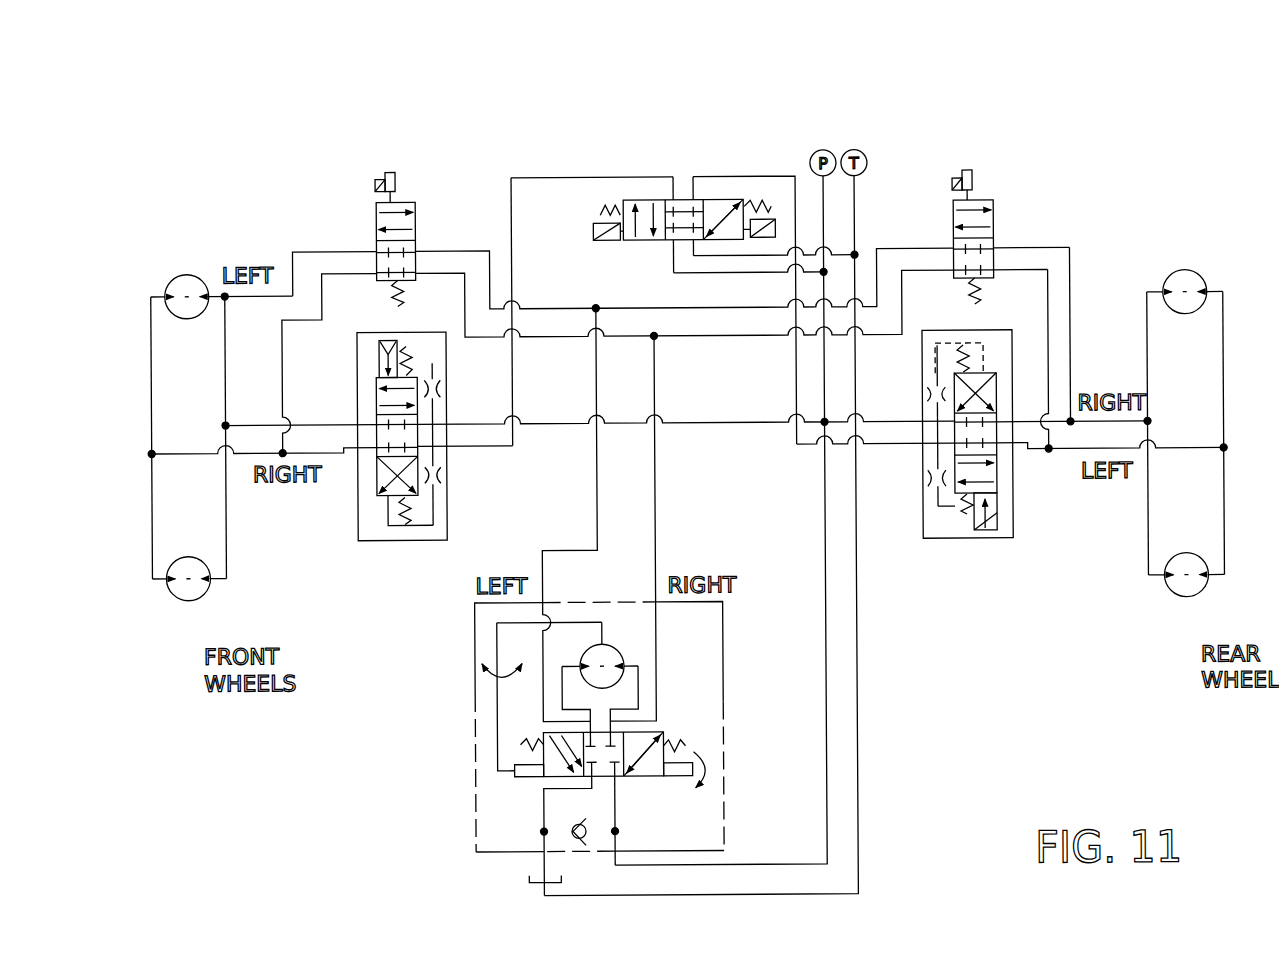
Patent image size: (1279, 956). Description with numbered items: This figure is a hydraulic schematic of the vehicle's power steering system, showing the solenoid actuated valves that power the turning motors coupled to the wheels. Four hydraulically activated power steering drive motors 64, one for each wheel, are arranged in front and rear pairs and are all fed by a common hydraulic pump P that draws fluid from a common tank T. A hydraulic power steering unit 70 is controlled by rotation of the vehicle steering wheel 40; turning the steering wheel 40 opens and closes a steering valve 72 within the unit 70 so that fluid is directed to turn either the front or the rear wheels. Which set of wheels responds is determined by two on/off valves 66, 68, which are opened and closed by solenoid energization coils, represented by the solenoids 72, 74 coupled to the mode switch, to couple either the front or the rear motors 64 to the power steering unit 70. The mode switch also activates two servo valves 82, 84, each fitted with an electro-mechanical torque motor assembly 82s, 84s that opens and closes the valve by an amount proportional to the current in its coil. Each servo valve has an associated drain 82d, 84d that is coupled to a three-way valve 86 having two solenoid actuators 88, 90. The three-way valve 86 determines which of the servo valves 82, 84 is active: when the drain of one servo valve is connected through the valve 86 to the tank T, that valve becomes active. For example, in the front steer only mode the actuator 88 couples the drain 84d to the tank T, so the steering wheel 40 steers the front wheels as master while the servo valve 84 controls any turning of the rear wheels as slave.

The steering wheel 40 is at (482, 695).
The power steering drive motors 64 is at (183, 280).
The valve 66 is at (420, 220).
The valve 68 is at (996, 221).
The hydraulic power steering unit 70 is at (468, 725).
The steering valve 72 is at (390, 171).
The solenoid 74 is at (968, 172).
The servo valve 82 is at (447, 352).
The electro-mechanical torque motor assembly 82s is at (378, 360).
The drain 82d is at (465, 447).
The servo valve 84 is at (960, 331).
The drain 84d is at (797, 433).
The electro-mechanical torque motor assembly 84s is at (1000, 504).
The three-way valve 86 is at (696, 200).
The solenoid actuator 88 is at (600, 222).
The solenoid actuator 90 is at (778, 220).